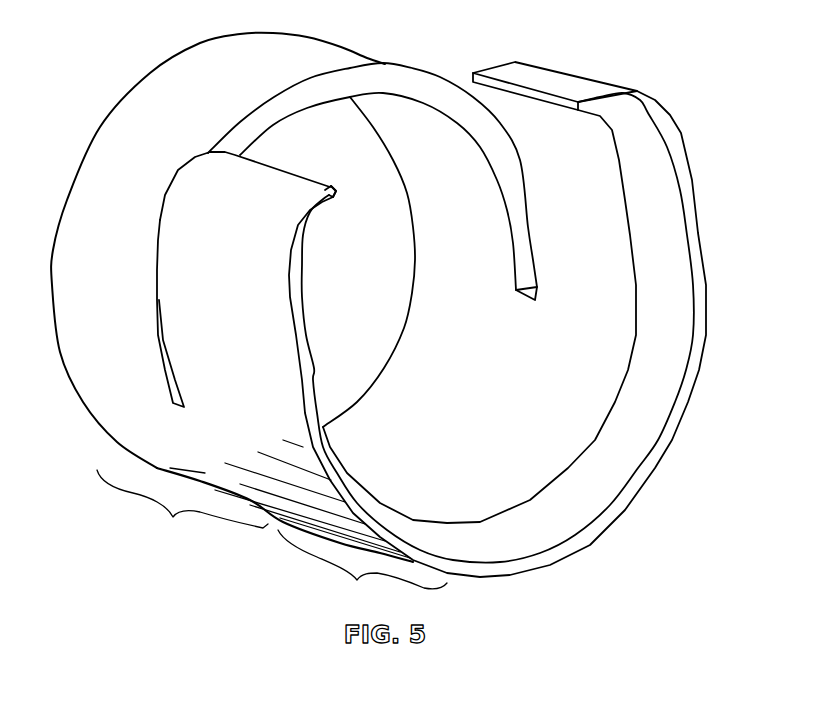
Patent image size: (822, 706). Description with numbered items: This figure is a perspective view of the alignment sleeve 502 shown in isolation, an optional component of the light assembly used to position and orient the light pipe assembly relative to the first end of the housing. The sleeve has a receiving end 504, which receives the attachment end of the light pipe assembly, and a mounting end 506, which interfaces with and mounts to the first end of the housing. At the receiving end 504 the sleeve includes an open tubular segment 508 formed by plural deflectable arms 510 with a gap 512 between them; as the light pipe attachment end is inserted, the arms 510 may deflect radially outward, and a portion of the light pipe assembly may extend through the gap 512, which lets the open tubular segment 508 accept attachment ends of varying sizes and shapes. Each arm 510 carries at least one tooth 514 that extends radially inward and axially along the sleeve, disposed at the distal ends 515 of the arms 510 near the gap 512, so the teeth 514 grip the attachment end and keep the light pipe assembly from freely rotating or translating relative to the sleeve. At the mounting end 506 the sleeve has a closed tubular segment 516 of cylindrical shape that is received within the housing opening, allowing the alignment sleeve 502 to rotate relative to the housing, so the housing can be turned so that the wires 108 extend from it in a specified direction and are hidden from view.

The alignment sleeve 502 is at (134, 29).
The receiving end 504 is at (603, 517).
The mounting end 506 is at (97, 137).
The open tubular segment 508 is at (331, 547).
The deflectable arms 510 is at (183, 212).
The gap 512 is at (386, 58).
The tooth 514 is at (332, 186).
The distal ends 515 is at (255, 168).
The closed tubular segment 516 is at (255, 501).
The wires 108 is at (750, 0).